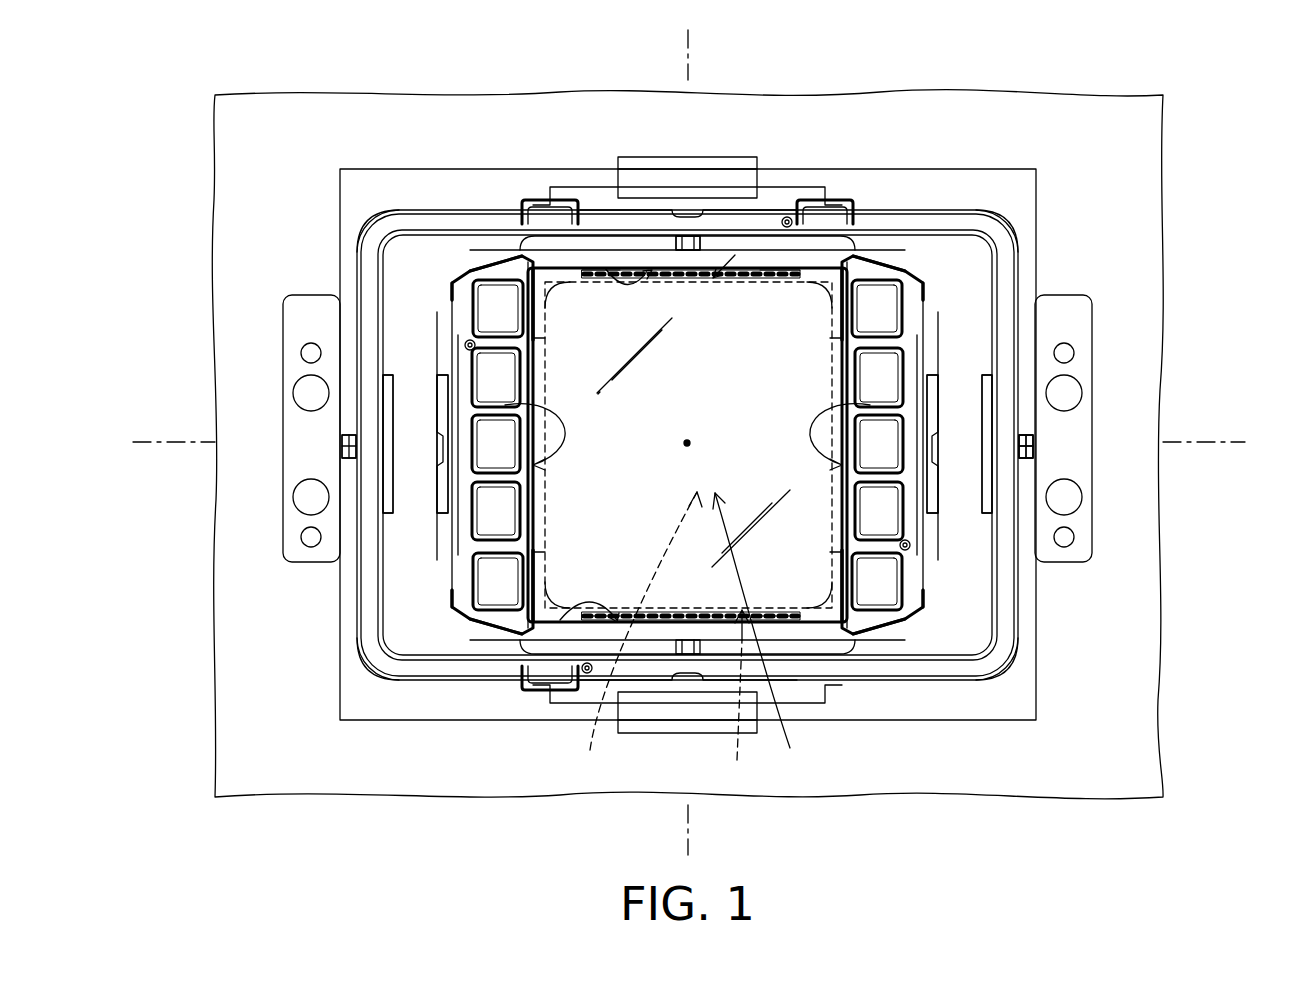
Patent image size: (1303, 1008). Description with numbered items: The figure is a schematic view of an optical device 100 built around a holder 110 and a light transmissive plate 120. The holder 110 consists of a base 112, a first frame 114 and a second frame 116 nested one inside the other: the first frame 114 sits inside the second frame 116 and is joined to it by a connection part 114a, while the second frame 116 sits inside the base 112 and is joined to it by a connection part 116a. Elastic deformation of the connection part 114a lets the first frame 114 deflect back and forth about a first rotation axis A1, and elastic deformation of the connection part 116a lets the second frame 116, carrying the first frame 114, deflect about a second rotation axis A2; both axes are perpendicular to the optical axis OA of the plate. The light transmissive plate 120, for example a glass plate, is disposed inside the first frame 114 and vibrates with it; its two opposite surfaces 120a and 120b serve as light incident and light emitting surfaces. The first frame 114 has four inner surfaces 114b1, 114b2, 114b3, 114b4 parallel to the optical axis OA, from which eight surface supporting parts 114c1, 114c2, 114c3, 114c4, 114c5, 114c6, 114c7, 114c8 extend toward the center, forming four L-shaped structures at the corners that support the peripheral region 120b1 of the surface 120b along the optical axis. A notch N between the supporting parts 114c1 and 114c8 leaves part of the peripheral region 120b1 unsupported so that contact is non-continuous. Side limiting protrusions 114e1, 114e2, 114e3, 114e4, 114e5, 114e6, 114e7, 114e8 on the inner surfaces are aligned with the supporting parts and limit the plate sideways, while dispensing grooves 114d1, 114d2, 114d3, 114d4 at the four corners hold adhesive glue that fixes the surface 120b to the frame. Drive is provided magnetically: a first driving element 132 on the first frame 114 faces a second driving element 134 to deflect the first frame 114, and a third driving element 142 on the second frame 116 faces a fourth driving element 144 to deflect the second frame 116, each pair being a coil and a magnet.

The optical device 100 is at (1229, 670).
The holder 110 is at (975, 52).
The base 112 is at (982, 120).
The first frame 114 is at (815, 215).
The connection part 114a is at (740, 230).
The first inner surface 114b1 is at (556, 222).
The second inner surface 114b2 is at (455, 398).
The third inner surface 114b3 is at (552, 690).
The fourth inner surface 114b4 is at (920, 398).
The first surface supporting part 114c1 is at (540, 280).
The second surface supporting part 114c2 is at (540, 313).
The third surface supporting part 114c3 is at (517, 592).
The fourth surface supporting part 114c4 is at (530, 615).
The fifth surface supporting part 114c5 is at (833, 623).
The sixth surface supporting part 114c6 is at (860, 605).
The seventh surface supporting part 114c7 is at (835, 327).
The eighth surface supporting part 114c8 is at (840, 265).
The dispensing groove 114d1 is at (520, 262).
The dispensing groove 114d2 is at (397, 677).
The dispensing groove 114d3 is at (987, 677).
The dispensing groove 114d4 is at (905, 265).
The side limiting protrusion 114e1 is at (527, 318).
The side limiting protrusion 114e2 is at (540, 563).
The side limiting protrusion 114e3 is at (848, 562).
The side limiting protrusion 114e4 is at (855, 315).
The side limiting protrusion 114e5 is at (568, 282).
The side limiting protrusion 114e6 is at (800, 262).
The side limiting protrusion 114e7 is at (545, 596).
The side limiting protrusion 114e8 is at (840, 608).
The second frame 116 is at (912, 222).
The connection part 116a is at (1030, 458).
The light transmissive plate 120 is at (648, 290).
The surface 120a is at (761, 635).
The surface 120b is at (632, 637).
The peripheral region 120b1 is at (732, 700).
The first driving element 132 is at (442, 435).
The second driving element 134 is at (388, 497).
The third driving element 142 is at (668, 190).
The fourth driving element 144 is at (705, 160).
The first rotation axis A1 is at (688, 78).
The second rotation axis A2 is at (1225, 442).
The notch N is at (700, 243).
The optical axis OA is at (687, 443).